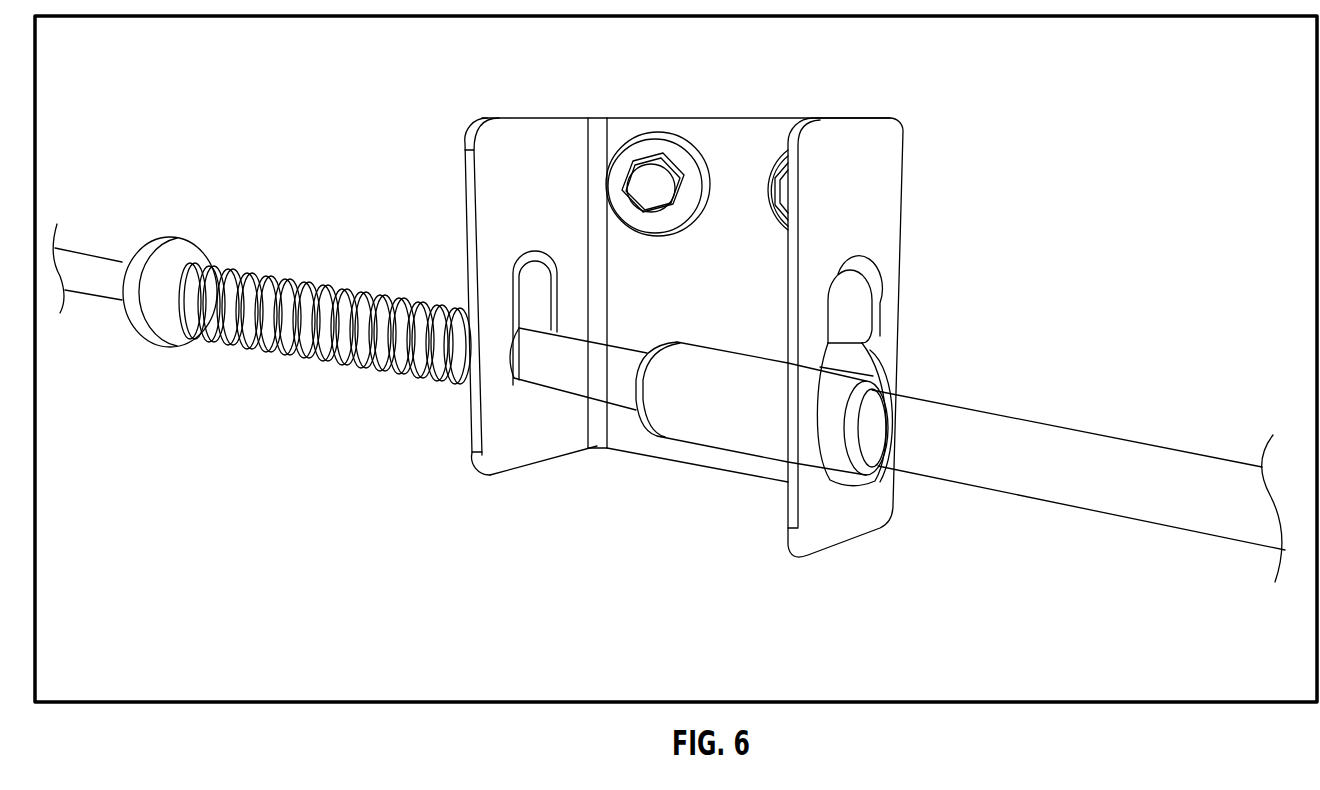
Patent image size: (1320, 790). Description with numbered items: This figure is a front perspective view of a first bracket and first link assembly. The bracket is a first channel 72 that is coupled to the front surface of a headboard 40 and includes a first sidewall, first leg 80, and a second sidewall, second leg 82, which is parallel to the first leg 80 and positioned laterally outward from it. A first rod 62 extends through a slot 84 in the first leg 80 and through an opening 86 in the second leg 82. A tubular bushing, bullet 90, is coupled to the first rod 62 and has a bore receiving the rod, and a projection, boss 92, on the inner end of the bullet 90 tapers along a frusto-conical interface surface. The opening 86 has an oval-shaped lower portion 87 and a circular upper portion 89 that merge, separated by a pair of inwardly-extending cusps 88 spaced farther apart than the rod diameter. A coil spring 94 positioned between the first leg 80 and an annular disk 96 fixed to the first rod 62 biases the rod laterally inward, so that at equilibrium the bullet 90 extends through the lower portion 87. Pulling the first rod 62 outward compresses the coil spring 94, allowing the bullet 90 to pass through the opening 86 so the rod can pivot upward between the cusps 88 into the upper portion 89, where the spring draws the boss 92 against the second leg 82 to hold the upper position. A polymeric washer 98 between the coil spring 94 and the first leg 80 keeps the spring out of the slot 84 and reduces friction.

The headboard 40 is at (328, 168).
The first rod 62 is at (1033, 437).
The first channel 72 is at (747, 153).
The first leg 80 is at (537, 208).
The second leg 82 is at (851, 337).
The slot 84 is at (545, 270).
The opening 86 is at (848, 326).
The lower portion 87 is at (866, 346).
The cusps 88 is at (828, 347).
The upper portion 89 is at (852, 291).
The bullet 90 is at (762, 393).
The boss 92 is at (650, 347).
The coil spring 94 is at (300, 283).
The annular disk 96 is at (151, 247).
The washer 98 is at (532, 296).